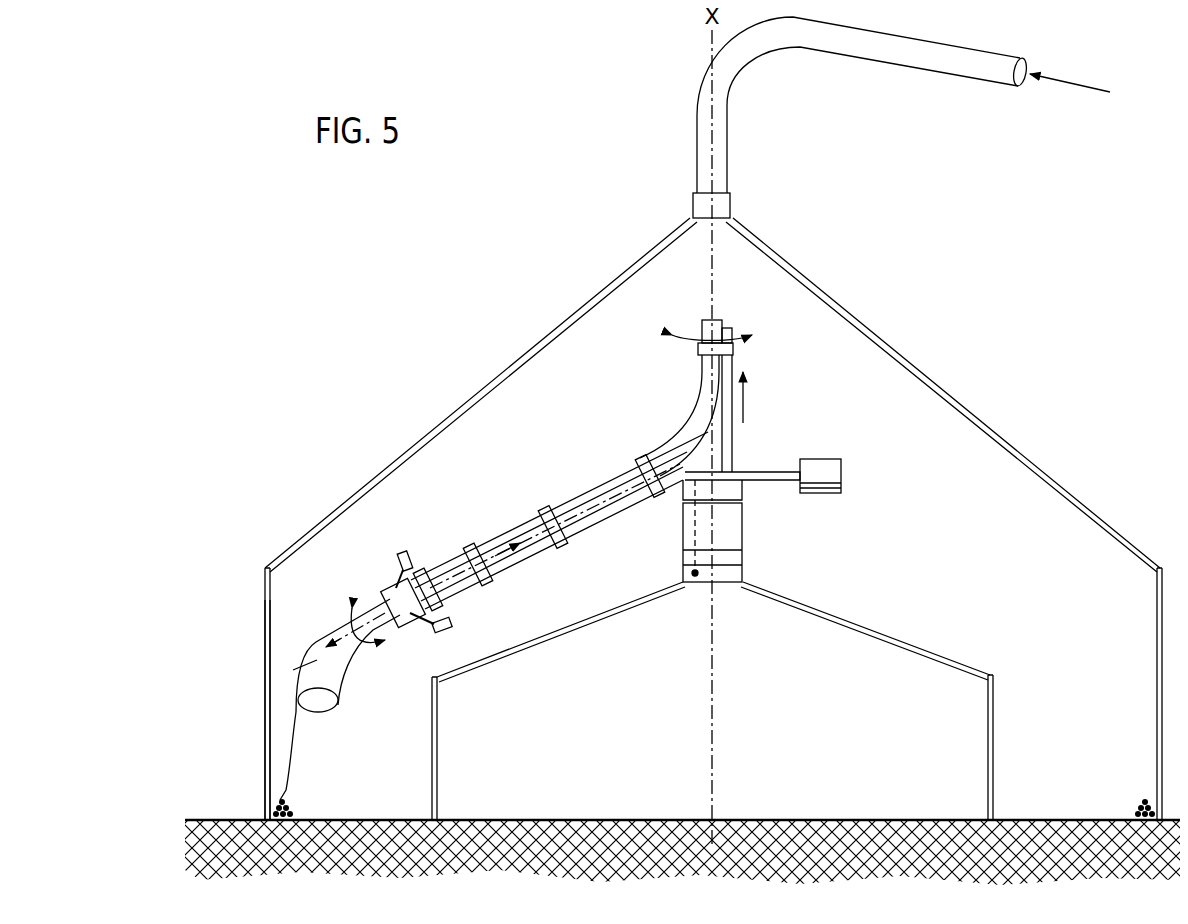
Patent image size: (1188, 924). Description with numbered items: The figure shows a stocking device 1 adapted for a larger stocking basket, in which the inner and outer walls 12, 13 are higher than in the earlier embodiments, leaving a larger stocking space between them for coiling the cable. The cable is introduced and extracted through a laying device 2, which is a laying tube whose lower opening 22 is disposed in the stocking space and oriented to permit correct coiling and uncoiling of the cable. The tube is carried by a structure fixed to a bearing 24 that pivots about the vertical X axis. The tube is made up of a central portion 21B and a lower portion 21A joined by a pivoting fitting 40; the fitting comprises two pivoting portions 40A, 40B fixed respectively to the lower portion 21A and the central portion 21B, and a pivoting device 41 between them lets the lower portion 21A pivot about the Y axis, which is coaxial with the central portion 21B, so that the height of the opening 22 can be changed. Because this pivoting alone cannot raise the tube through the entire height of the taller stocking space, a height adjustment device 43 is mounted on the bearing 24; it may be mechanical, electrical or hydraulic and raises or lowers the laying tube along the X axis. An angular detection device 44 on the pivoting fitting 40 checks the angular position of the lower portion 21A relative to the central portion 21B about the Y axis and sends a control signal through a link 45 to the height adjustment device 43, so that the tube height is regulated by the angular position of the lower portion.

The stocking device 1 is at (988, 390).
The laying device 2 is at (518, 530).
The inner wall 12 is at (263, 728).
The outer wall 13 is at (440, 746).
The lower portion 21A is at (400, 630).
The central portion 21B is at (448, 570).
The lower opening 22 is at (338, 715).
The bearing 24 is at (735, 490).
The pivoting fitting 40 is at (407, 533).
The pivoting portion 40A is at (390, 598).
The pivoting portion 40B is at (413, 580).
The pivoting device 41 is at (398, 585).
The height adjustment device 43 is at (735, 575).
The angular detection device 44 is at (394, 594).
The link 45 is at (460, 596).